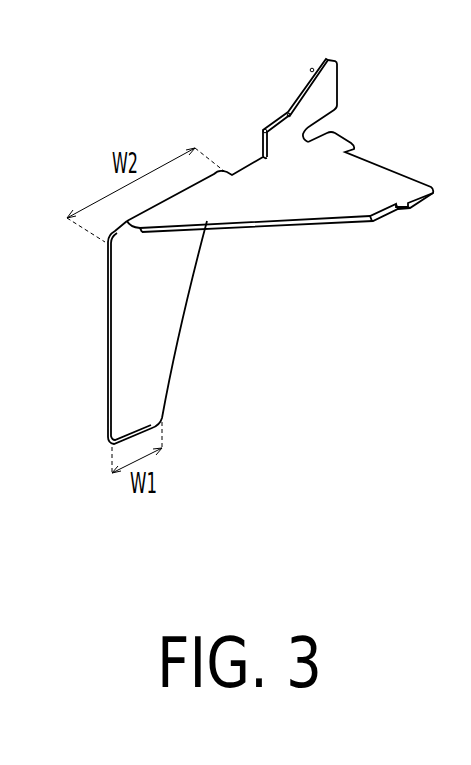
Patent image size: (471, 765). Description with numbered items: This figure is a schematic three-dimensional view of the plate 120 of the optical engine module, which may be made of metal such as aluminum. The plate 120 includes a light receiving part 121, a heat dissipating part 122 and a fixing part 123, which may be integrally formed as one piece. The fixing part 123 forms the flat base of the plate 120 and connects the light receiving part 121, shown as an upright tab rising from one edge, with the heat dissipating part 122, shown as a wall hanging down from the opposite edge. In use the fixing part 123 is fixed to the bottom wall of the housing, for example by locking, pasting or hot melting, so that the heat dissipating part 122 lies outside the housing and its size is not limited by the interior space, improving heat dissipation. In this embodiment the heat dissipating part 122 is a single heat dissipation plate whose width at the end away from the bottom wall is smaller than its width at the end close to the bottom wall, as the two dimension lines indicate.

The plate 120 is at (45, 83).
The light receiving part 121 is at (318, 97).
The heat dissipating part 122 is at (145, 340).
The fixing part 123 is at (318, 195).